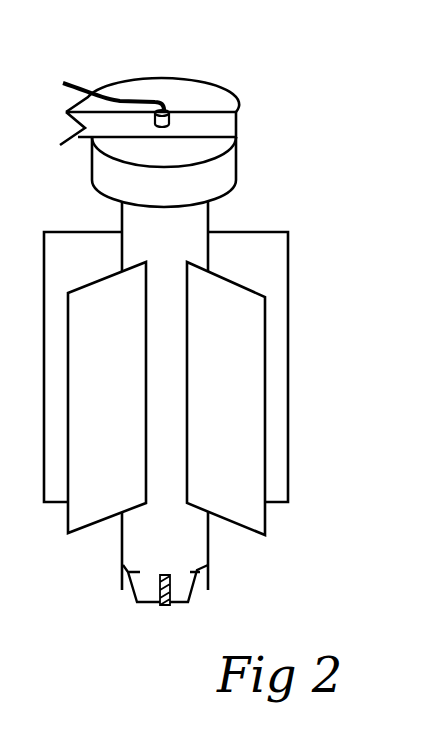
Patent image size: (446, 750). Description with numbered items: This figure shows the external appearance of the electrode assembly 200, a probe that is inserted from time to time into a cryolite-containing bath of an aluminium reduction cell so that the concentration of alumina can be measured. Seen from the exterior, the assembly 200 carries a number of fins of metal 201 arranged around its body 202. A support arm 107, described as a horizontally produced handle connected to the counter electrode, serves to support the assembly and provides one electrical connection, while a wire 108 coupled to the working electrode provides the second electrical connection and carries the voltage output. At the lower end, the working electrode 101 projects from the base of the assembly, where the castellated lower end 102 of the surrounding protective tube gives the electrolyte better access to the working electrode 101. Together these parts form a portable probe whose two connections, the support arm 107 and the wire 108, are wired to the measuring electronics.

The electrode assembly 200 is at (300, 122).
The fins of metal 201 is at (288, 435).
The housing body 202 is at (297, 198).
The support arm 107 is at (86, 128).
The wire 108 is at (102, 63).
The working electrode 101 is at (165, 608).
The connector base 102 is at (285, 590).